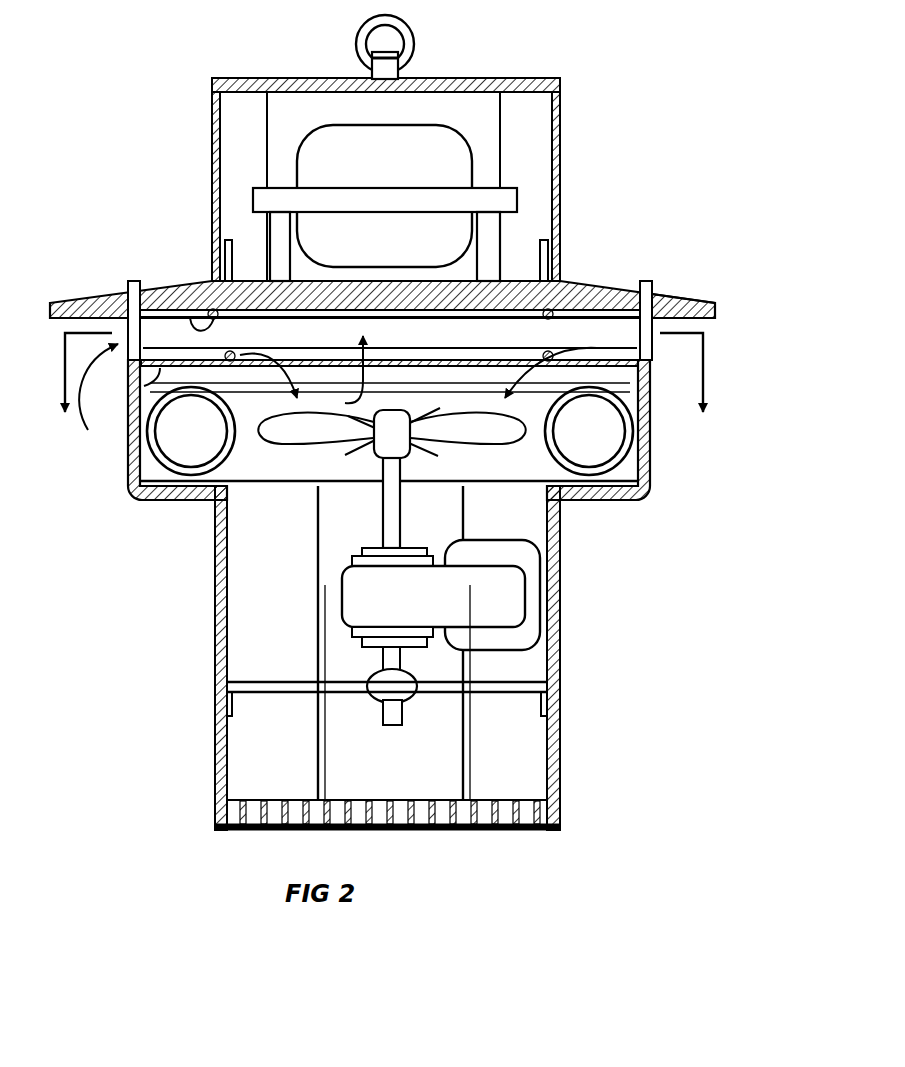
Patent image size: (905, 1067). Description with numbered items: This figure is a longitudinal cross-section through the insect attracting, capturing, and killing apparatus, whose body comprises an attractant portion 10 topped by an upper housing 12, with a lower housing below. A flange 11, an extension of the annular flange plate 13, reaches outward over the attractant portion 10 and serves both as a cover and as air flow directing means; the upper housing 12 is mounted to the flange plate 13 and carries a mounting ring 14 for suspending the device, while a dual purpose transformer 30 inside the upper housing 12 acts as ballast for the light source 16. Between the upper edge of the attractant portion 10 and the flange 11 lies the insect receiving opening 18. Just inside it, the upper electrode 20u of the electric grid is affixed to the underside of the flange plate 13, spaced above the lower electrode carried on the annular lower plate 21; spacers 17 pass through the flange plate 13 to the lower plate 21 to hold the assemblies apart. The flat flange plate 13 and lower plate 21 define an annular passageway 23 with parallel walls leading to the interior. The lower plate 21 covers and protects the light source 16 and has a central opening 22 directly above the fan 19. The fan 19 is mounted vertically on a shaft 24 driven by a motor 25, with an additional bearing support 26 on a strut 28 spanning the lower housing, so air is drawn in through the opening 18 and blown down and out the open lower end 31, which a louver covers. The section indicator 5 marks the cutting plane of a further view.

The section line 5- 5 is at (380, 389).
The attractant portion 10 is at (652, 470).
The flange 11 is at (705, 304).
The upper housing 12 is at (560, 158).
The flange plate 13 is at (572, 283).
The mounting ring 14 is at (408, 26).
The light source 16 is at (128, 487).
The spacers 17 is at (131, 289).
The insect receiving opening 18 is at (95, 403).
The fan 19 is at (503, 446).
The upper electrode 20u is at (190, 316).
The lower plate 21 is at (128, 393).
The central opening 22 is at (418, 377).
The passageway 23 is at (173, 351).
The shaft 24 is at (402, 505).
The motor 25 is at (520, 652).
The bearing support 26 is at (417, 700).
The strut 28 is at (257, 682).
The transformer 30 is at (338, 138).
The open lower end 31 is at (261, 838).